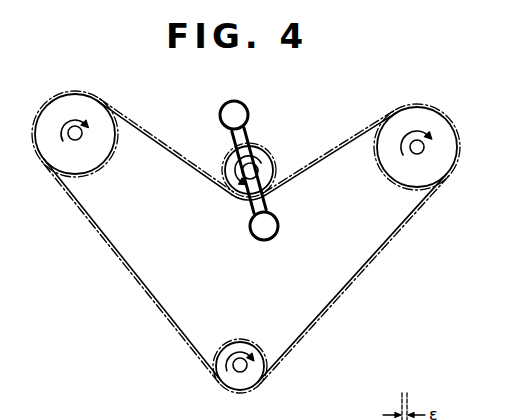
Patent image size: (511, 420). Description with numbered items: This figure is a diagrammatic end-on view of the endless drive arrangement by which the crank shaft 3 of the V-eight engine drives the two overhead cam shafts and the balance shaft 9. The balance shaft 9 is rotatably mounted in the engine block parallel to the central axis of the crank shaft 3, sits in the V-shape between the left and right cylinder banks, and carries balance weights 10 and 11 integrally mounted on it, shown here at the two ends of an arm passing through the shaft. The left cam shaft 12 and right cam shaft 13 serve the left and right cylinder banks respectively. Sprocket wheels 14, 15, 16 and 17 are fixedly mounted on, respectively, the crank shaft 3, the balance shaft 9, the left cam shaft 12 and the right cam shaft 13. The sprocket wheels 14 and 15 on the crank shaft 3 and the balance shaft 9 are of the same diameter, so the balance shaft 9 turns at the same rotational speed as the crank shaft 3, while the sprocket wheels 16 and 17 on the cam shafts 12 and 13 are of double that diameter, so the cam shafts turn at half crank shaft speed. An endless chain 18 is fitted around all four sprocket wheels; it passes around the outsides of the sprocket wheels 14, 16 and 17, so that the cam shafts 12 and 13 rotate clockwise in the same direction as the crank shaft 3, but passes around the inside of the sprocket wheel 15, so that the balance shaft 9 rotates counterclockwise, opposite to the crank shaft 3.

The crank shaft 3 is at (242, 371).
The balance shaft 9 is at (263, 163).
The balance weight 10 is at (270, 224).
The balance weight 11 is at (248, 114).
The left cam shaft 12 is at (75, 134).
The right cam shaft 13 is at (417, 147).
The sprocket wheel 14 is at (235, 383).
The sprocket wheel 15 is at (265, 179).
The sprocket wheel 16 is at (87, 158).
The sprocket wheel 17 is at (444, 146).
The endless chain 18 is at (380, 248).